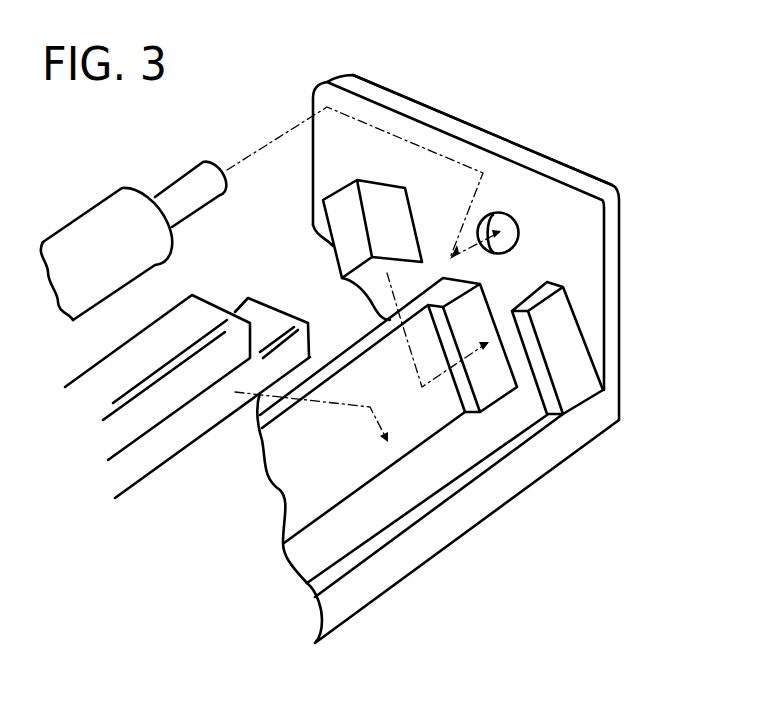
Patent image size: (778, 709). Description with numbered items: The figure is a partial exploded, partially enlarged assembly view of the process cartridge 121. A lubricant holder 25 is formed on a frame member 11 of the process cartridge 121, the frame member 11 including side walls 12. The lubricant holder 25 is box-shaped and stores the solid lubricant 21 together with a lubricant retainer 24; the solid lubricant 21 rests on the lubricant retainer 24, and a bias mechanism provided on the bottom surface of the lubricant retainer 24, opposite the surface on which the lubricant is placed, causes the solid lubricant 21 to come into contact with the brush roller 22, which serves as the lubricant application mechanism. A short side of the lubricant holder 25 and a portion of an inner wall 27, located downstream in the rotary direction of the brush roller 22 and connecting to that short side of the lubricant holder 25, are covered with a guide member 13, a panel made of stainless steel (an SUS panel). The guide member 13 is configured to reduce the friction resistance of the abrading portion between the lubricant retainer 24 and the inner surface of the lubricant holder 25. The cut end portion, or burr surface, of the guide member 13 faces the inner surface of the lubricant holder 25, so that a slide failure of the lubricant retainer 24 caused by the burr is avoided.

The frame member 11 is at (510, 490).
The side walls 12 is at (557, 167).
The process cartridge 121 is at (459, 106).
The guide member 13 is at (372, 178).
The solid lubricant 21 is at (200, 308).
The brush roller 22 is at (92, 215).
The lubricant retainer 24 is at (263, 310).
The lubricant holder 25 is at (300, 562).
The inner wall 27 is at (355, 348).